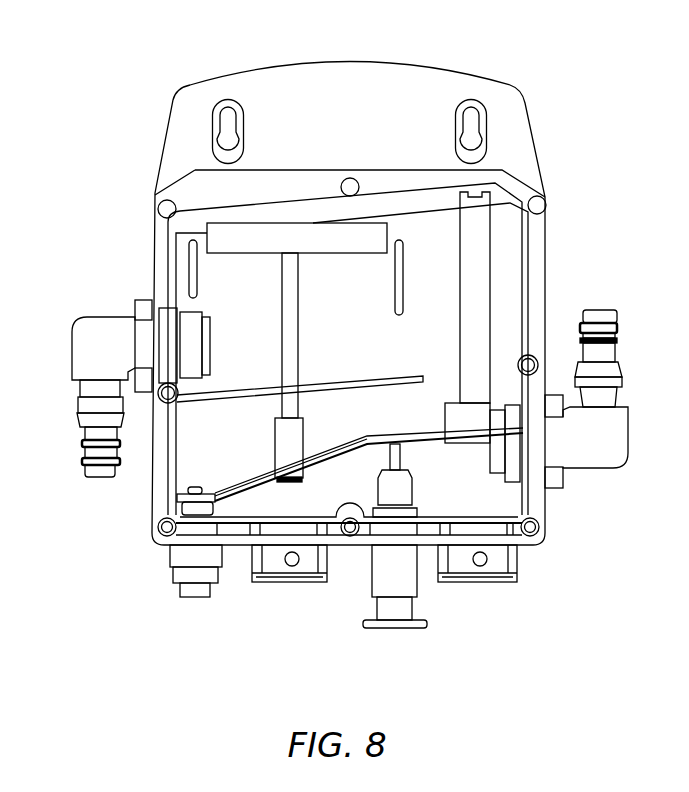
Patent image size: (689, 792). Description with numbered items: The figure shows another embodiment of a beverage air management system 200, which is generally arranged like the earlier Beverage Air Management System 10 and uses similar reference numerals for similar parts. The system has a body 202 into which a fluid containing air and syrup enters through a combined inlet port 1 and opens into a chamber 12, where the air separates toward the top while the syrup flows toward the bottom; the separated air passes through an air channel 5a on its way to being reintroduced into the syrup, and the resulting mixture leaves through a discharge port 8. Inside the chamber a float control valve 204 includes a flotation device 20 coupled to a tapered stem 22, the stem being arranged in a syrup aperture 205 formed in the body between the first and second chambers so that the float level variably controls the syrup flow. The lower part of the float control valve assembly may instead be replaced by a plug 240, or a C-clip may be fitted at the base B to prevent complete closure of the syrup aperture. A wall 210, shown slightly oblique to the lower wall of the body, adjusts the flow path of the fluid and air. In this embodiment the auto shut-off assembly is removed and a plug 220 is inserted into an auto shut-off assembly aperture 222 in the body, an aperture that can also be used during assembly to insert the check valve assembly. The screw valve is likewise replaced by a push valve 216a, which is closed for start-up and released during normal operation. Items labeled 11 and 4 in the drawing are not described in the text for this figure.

The beverage air management system 200 is at (120, 110).
The body 202 is at (545, 177).
The Beverage Air Management System 10 is at (483, 52).
The section line 11 is at (292, 58).
The chamber 12 is at (207, 268).
The air channel 5a is at (482, 295).
The flotation device 20 is at (363, 250).
The stem 22 is at (283, 365).
The float control valve 204 is at (312, 320).
The syrup aperture 205 is at (305, 412).
The wall 210 is at (232, 404).
The base B is at (306, 481).
The auto shut-off assembly aperture 222 is at (498, 506).
The push valve 216a is at (395, 628).
The plug 240 is at (250, 580).
The plug 220 is at (517, 583).
The foot 4 is at (172, 560).
The inlet port 1 is at (82, 420).
The discharge port 8 is at (608, 467).